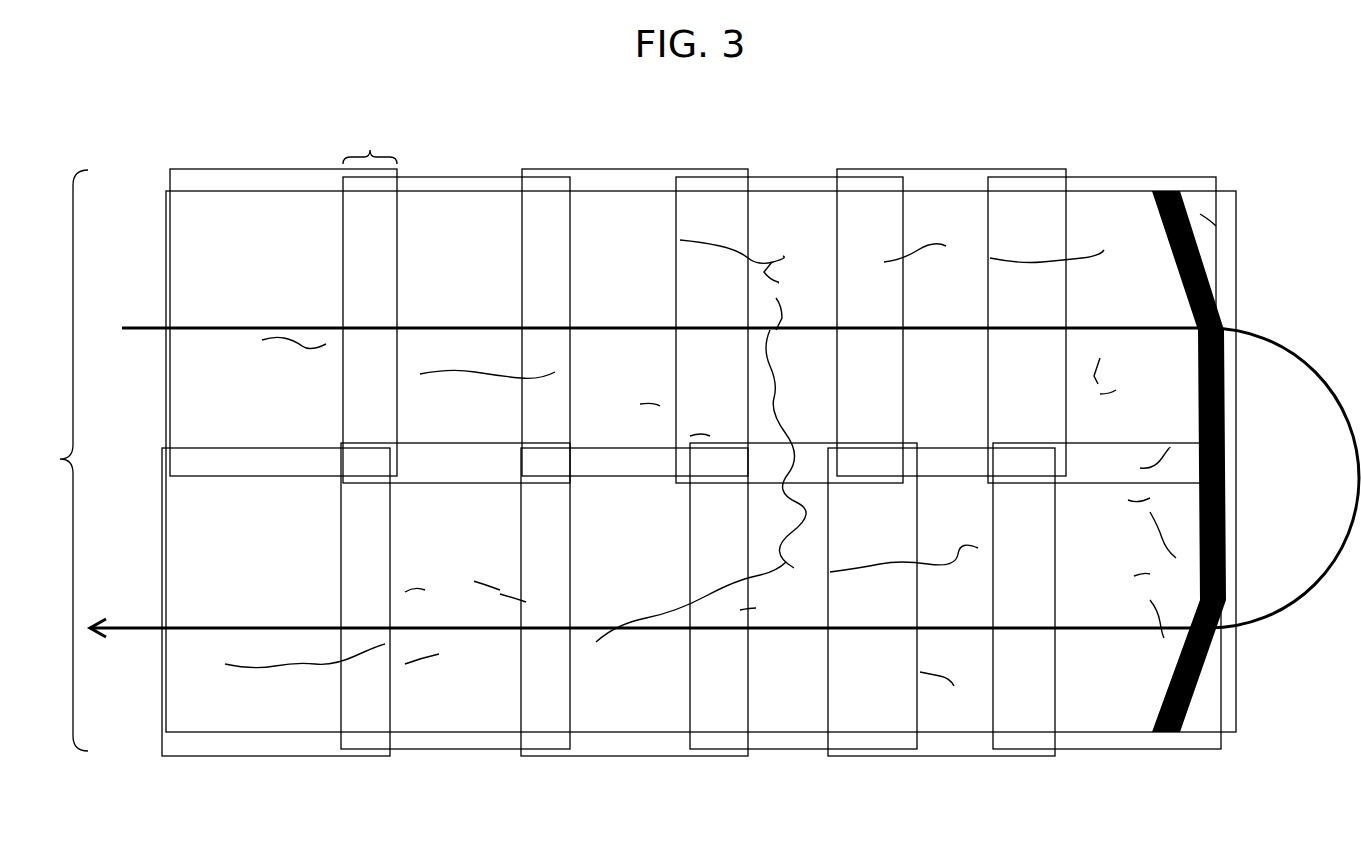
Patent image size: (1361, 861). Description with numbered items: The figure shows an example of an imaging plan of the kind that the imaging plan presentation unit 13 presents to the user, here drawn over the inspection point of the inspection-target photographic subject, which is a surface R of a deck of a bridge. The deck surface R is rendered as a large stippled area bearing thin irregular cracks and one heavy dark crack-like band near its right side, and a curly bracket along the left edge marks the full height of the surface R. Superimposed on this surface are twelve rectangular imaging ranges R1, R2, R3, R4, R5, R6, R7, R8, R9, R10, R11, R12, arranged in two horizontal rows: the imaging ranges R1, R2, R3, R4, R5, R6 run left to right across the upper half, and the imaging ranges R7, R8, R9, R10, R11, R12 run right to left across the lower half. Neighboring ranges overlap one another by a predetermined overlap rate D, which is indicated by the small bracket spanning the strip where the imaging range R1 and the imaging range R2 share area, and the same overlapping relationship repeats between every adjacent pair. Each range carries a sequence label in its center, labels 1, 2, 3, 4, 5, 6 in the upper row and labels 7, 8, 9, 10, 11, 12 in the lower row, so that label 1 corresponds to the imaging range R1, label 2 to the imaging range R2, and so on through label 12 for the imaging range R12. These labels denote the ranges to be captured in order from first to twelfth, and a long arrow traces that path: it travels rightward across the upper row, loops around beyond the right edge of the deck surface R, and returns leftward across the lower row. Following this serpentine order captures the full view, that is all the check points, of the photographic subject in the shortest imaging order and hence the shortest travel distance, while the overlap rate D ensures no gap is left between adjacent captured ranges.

The imaging plan presentation unit 13 is at (1232, 229).
The surface of a deck of a bridge R is at (62, 460).
The overlap rate D is at (370, 144).
The imaging range R1 is at (279, 169).
The imaging range R2 is at (456, 169).
The imaging range R3 is at (633, 169).
The imaging range R4 is at (791, 169).
The imaging range R5 is at (946, 169).
The imaging range R6 is at (1099, 169).
The imaging range R7 is at (1114, 757).
The imaging range R8 is at (950, 757).
The imaging range R9 is at (784, 757).
The imaging range R10 is at (634, 757).
The imaging range R11 is at (452, 757).
The imaging range R12 is at (272, 757).
The image capture order 1 is at (283, 279).
The image capture order 2 is at (460, 279).
The image capture order 3 is at (635, 279).
The image capture order 4 is at (790, 279).
The image capture order 5 is at (950, 279).
The image capture order 6 is at (1102, 279).
The image capture order 7 is at (1117, 587).
The image capture order 8 is at (952, 587).
The image capture order 9 is at (787, 587).
The image capture order 10 is at (635, 587).
The image capture order 11 is at (457, 587).
The image capture order 12 is at (275, 587).